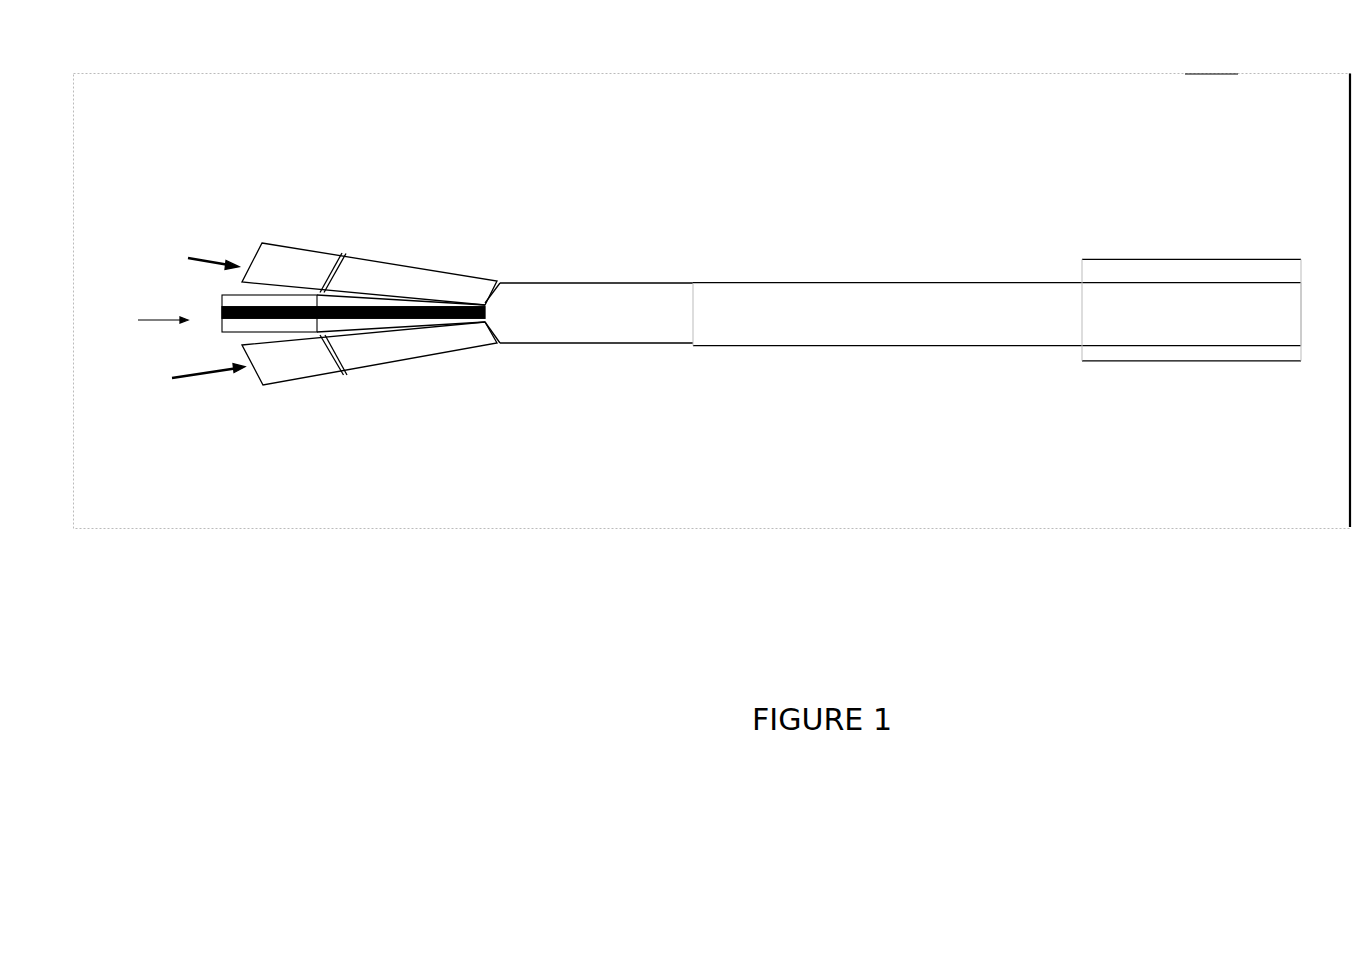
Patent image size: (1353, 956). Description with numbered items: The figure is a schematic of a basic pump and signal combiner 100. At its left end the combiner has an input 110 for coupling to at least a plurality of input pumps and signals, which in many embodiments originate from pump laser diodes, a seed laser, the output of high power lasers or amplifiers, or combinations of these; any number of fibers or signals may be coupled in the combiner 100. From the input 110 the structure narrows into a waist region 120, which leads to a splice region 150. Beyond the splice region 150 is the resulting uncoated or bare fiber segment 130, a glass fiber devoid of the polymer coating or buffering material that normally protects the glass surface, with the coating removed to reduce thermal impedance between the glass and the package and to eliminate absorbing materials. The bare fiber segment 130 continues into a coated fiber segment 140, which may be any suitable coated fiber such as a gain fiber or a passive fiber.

The pump and signal combiner 100 is at (1280, 74).
The input 110 is at (299, 233).
The waist region 120 is at (535, 287).
The bare fiber segment 130 is at (780, 300).
The coated fiber segment 140 is at (1157, 272).
The splice region 150 is at (690, 265).